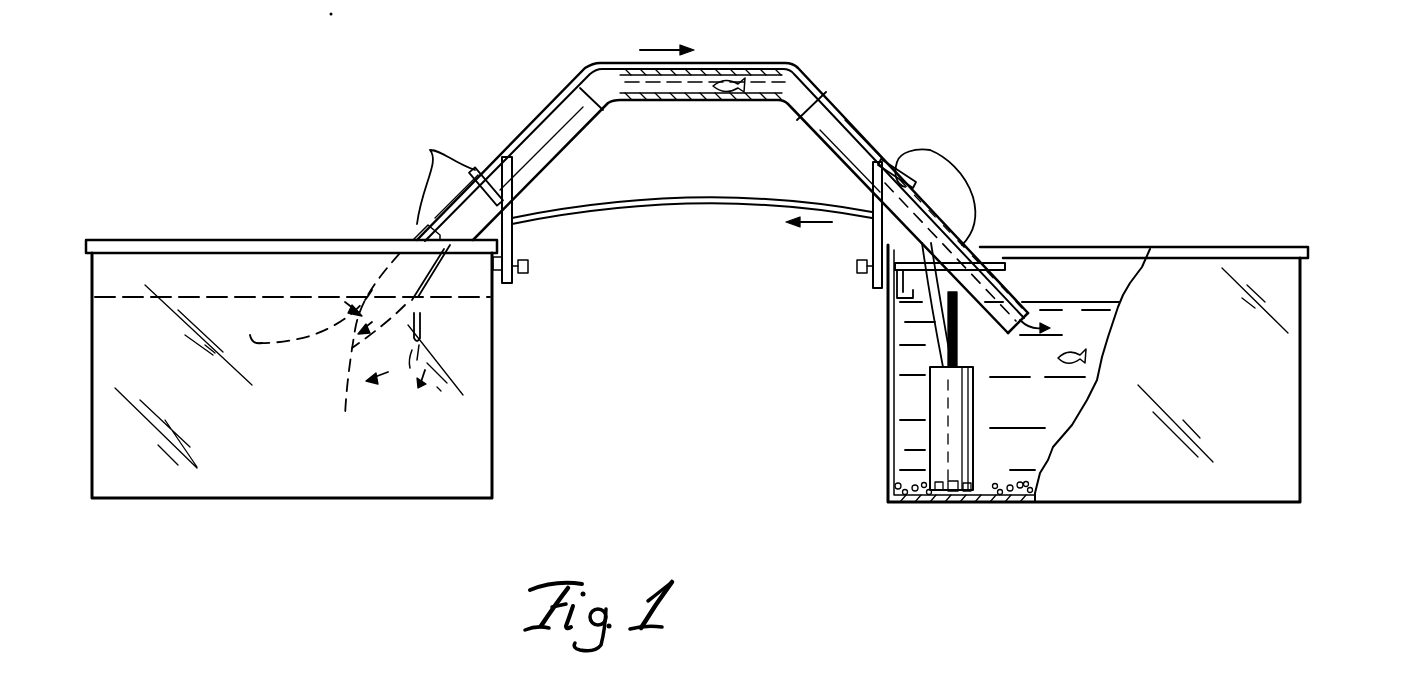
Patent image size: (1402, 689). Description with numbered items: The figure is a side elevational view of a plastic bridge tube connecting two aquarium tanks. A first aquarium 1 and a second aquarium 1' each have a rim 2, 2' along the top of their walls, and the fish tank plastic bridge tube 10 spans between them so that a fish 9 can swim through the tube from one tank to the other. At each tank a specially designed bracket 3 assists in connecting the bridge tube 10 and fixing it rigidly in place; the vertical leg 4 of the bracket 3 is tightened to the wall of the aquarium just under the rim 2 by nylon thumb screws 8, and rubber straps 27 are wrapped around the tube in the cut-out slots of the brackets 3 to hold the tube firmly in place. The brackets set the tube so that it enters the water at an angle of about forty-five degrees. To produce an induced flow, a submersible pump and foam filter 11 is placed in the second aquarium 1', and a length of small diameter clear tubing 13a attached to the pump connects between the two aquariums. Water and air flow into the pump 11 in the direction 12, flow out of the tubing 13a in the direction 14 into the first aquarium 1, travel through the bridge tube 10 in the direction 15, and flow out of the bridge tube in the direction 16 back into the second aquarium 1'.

The aquarium 1 is at (317, 375).
The aquarium 1' is at (1133, 373).
The rim 2 is at (291, 229).
The rim 2' is at (1144, 230).
The bracket 3 is at (513, 230).
The vertical leg of the bracket 4 is at (510, 193).
The thumb screws 8 is at (528, 267).
The fish 9 is at (733, 82).
The fish tank plastic bridge tube 10 is at (863, 140).
The submersible pump and foam filter 11 is at (962, 418).
The direction of flow of water and air into the pump 12 is at (1016, 432).
The tubing 13a is at (622, 204).
The direction of flow of water and air out of the tubing 14 is at (432, 400).
The direction of flow of water through the bridge tube 15 is at (345, 379).
The direction of flow of water out of the bridge tube 16 is at (1018, 330).
The rubber straps 27 is at (684, 191).